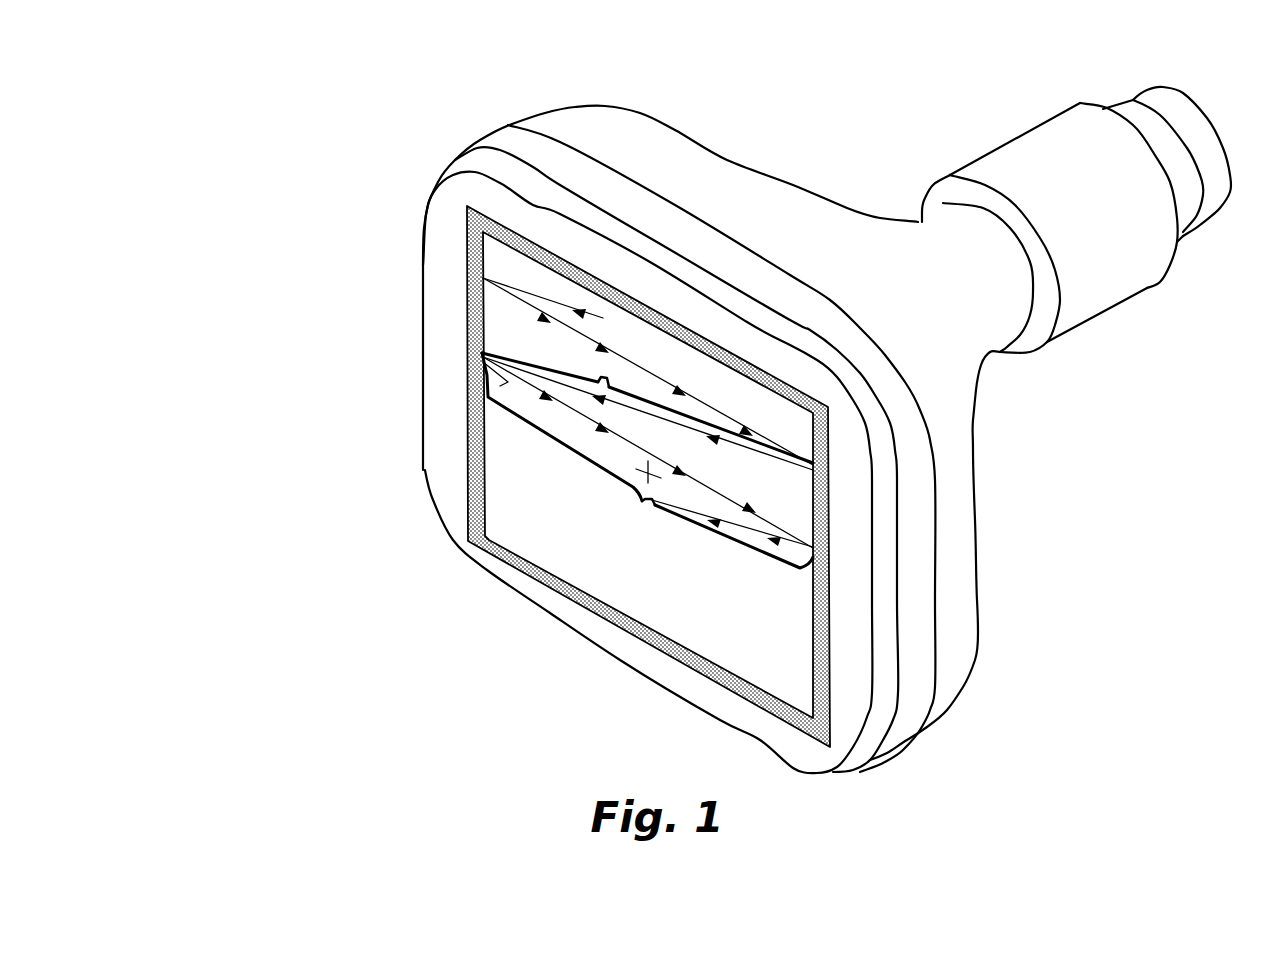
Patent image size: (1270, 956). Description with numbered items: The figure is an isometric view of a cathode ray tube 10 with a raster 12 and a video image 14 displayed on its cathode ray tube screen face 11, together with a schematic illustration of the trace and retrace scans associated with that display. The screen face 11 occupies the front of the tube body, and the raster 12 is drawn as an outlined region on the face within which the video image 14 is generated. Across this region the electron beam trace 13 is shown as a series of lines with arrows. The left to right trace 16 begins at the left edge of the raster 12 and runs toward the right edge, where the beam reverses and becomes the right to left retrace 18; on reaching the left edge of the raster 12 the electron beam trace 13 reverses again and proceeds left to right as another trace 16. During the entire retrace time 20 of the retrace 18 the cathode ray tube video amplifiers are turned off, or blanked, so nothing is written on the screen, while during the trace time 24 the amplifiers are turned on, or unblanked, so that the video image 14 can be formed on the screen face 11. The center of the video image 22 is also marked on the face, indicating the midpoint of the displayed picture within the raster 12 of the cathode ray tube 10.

The cathode ray tube 10 is at (805, 205).
The cathode ray tube screen face 11 is at (550, 594).
The raster 12 is at (467, 207).
The electron beam trace 13 is at (720, 415).
The video image 14 is at (628, 330).
The left to right trace 16 is at (473, 352).
The right to left retrace 18 is at (730, 443).
The retrace time 20 is at (608, 378).
The center of the video image 22 is at (648, 472).
The trace time 24 is at (653, 500).